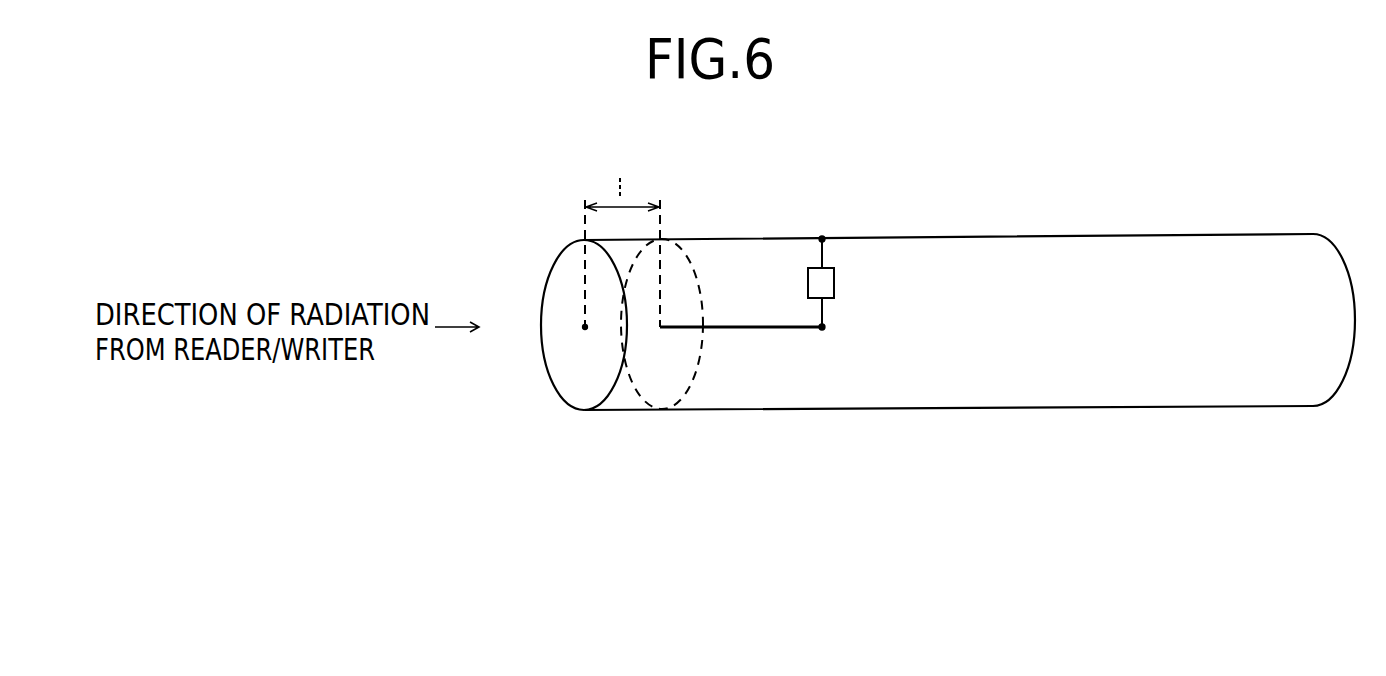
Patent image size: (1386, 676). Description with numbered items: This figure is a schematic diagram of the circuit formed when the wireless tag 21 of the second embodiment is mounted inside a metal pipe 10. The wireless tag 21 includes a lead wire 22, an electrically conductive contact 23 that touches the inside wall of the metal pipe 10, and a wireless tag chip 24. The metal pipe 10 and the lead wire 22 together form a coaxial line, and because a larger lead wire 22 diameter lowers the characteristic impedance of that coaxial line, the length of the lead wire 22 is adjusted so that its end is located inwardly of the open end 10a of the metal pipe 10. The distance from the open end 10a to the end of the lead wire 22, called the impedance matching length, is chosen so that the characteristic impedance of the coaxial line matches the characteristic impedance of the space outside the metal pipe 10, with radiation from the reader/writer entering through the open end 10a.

The metal pipe 10 is at (1257, 387).
The open end of the metal pipe 10a is at (570, 262).
The wireless tag 21 is at (850, 450).
The lead wire 22 is at (768, 328).
The electrically conductive contact 23 is at (823, 238).
The wireless tag chip 24 is at (834, 283).